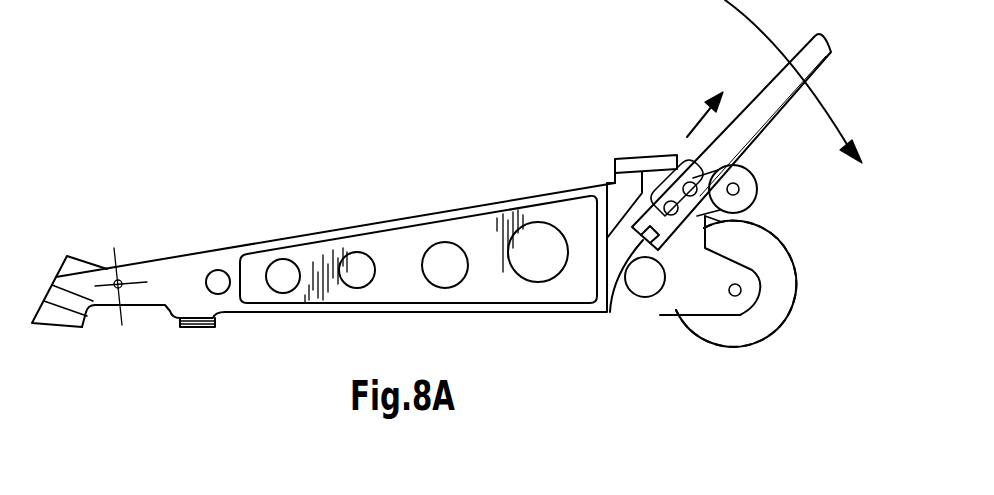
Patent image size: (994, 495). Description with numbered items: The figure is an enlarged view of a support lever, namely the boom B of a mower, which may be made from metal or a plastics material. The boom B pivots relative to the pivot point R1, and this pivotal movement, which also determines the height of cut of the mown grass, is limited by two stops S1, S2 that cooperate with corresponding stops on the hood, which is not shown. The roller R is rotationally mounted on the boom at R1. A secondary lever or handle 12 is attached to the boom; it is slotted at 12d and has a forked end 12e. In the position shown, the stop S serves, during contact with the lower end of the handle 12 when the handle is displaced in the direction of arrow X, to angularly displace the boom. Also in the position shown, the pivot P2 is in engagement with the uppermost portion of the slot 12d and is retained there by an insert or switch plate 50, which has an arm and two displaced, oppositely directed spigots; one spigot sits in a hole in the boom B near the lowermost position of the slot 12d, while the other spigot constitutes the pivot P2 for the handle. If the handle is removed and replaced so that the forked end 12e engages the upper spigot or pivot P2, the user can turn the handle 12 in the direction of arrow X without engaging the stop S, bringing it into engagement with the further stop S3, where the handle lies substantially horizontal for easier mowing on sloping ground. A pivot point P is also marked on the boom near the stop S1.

The stop S1 is at (60, 318).
The stop S2 is at (210, 328).
The pivot point P is at (120, 282).
The boom B is at (390, 217).
The stop S is at (615, 183).
The further stop S3 is at (656, 157).
The slot 12d is at (672, 187).
The secondary lever or handle 12 is at (812, 60).
The pivot P2 is at (712, 187).
The switch plate 50 is at (707, 217).
The pivot point R1 is at (743, 296).
The roller R is at (722, 332).
The forked end 12e is at (612, 307).
The arrow X is at (803, 85).